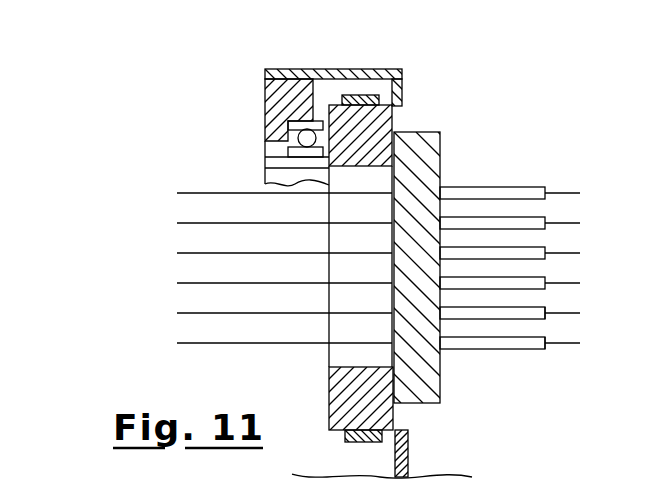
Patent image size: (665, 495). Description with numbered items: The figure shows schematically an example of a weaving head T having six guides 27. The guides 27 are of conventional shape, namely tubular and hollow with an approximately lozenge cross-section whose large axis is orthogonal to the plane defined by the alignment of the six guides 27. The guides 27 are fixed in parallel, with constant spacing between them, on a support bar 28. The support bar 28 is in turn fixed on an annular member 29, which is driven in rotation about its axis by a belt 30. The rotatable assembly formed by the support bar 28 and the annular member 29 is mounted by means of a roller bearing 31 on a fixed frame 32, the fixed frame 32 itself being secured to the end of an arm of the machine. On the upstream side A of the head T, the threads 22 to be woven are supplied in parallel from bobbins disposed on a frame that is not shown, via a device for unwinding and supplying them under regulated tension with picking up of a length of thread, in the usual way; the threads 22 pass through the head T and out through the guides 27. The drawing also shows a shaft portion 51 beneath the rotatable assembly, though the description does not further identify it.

The threads 22 is at (200, 253).
The guides 27 is at (513, 313).
The support bar 28 is at (433, 157).
The annular member 29 is at (402, 117).
The belt 30 is at (372, 90).
The roller bearing 31 is at (278, 152).
The fixed frame 32 is at (330, 69).
The shaft 51 is at (611, 493).
The weaving head T is at (552, 127).
The upstream side A is at (120, 270).